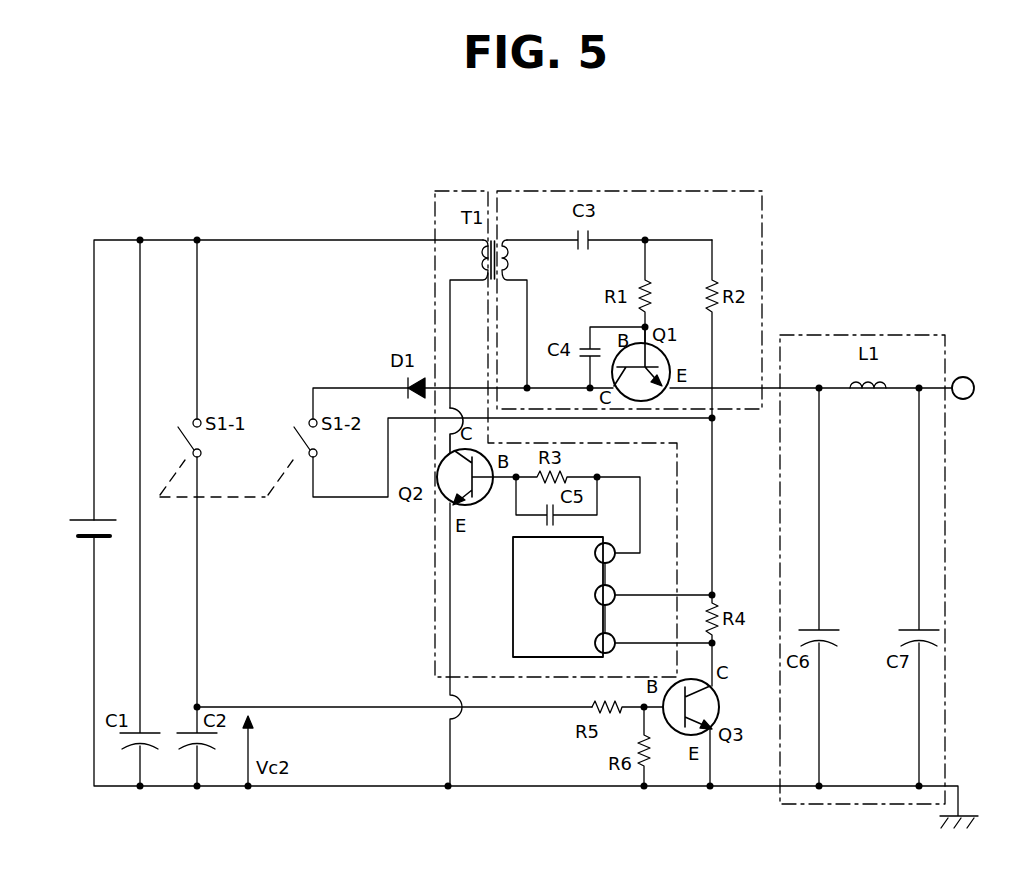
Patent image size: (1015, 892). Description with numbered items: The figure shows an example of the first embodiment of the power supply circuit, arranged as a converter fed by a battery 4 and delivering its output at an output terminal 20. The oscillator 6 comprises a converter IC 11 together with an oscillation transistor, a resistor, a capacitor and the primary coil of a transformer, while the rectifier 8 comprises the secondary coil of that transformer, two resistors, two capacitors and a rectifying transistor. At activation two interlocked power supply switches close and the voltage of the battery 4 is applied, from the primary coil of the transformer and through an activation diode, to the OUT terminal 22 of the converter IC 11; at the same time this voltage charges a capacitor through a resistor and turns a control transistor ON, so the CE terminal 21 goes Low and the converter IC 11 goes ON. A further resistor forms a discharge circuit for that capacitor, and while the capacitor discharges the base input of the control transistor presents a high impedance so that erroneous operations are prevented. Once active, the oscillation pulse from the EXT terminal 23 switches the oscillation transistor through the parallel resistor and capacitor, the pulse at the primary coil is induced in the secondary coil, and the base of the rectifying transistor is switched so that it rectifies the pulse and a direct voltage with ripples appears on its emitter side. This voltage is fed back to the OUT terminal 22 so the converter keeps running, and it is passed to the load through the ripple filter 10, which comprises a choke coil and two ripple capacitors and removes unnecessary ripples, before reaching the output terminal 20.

The battery 4 is at (84, 540).
The oscillator 6 is at (435, 612).
The rectifier 8 is at (548, 190).
The ripple filter 10 is at (868, 335).
The converter IC 11 is at (513, 611).
The output terminal 20 is at (966, 399).
The CE terminal 21 is at (616, 638).
The OUT terminal 22 is at (616, 590).
The EXT terminal 23 is at (613, 545).